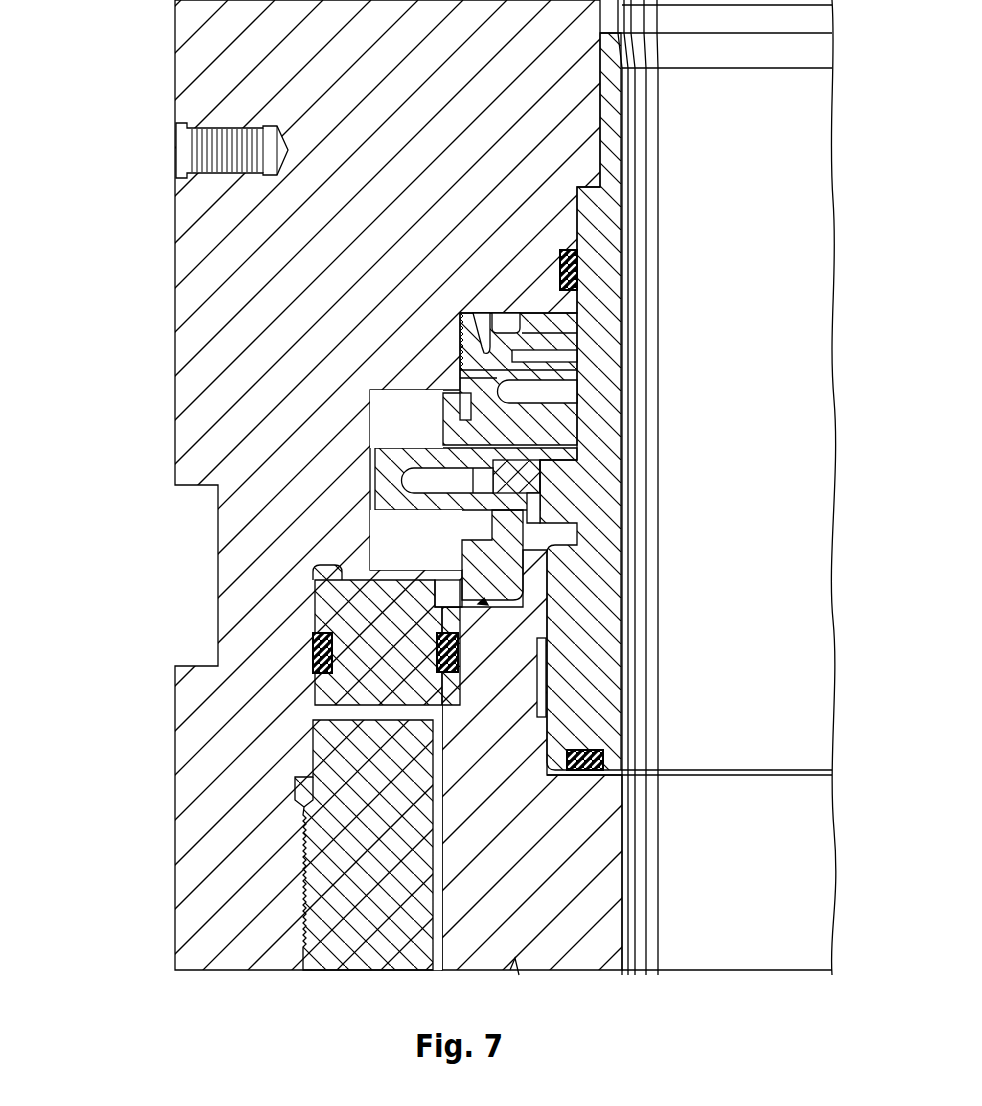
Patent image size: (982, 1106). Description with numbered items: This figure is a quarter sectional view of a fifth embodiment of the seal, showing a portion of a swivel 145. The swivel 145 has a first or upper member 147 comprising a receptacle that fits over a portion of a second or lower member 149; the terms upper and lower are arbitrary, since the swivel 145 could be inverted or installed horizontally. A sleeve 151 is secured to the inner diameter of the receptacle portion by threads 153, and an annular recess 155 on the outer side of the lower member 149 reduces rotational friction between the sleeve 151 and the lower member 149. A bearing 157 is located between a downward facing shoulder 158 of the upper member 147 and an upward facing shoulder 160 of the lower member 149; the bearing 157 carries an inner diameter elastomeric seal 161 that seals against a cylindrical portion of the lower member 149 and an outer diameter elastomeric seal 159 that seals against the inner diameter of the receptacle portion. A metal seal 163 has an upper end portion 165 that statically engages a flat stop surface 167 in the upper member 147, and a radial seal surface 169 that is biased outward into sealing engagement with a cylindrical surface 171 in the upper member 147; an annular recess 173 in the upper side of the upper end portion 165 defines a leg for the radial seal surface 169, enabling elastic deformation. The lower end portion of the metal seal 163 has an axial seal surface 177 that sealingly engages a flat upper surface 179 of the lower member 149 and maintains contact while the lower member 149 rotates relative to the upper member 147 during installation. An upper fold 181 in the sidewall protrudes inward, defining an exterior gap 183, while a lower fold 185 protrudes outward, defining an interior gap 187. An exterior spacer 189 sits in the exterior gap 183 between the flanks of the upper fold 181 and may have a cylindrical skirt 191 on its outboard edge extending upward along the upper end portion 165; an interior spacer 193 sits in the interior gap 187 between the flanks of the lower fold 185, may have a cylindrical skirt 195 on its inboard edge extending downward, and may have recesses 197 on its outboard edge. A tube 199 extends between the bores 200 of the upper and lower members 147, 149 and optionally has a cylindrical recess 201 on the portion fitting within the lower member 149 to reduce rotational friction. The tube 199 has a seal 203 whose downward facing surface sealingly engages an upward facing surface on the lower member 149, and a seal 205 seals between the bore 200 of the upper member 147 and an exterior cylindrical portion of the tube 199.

The swivel 145 is at (146, 211).
The upper member 147 is at (178, 380).
The lower member 149 is at (622, 830).
The sleeve 151 is at (432, 886).
The threads 153 is at (303, 853).
The annular recess 155 is at (442, 915).
The bearing 157 is at (317, 622).
The downward facing shoulder 158 is at (313, 607).
The outer diameter elastomeric seal 159 is at (313, 660).
The upward facing shoulder 160 is at (437, 655).
The inner diameter elastomeric seal 161 is at (549, 657).
The metal seal 163 is at (576, 407).
The upper end portion 165 is at (505, 350).
The flat stop surface 167 is at (522, 340).
The radial seal surface 169 is at (478, 338).
The cylindrical surface 171 is at (527, 364).
The annular recess 173 is at (515, 355).
The axial seal surface 177 is at (545, 623).
The upper surface 179 is at (482, 603).
The upper fold 181 is at (487, 472).
The exterior gap 183 is at (508, 440).
The lower fold 185 is at (372, 482).
The interior gap 187 is at (430, 480).
The exterior spacer 189 is at (498, 432).
The cylindrical skirt 191 is at (445, 431).
The interior spacer 193 is at (480, 480).
The cylindrical skirt 195 is at (489, 495).
The recesses 197 is at (492, 483).
The tube 199 is at (626, 205).
The bore 200 is at (786, 119).
The cylindrical recess 201 is at (540, 694).
The seal 203 is at (575, 750).
The seal 205 is at (575, 268).